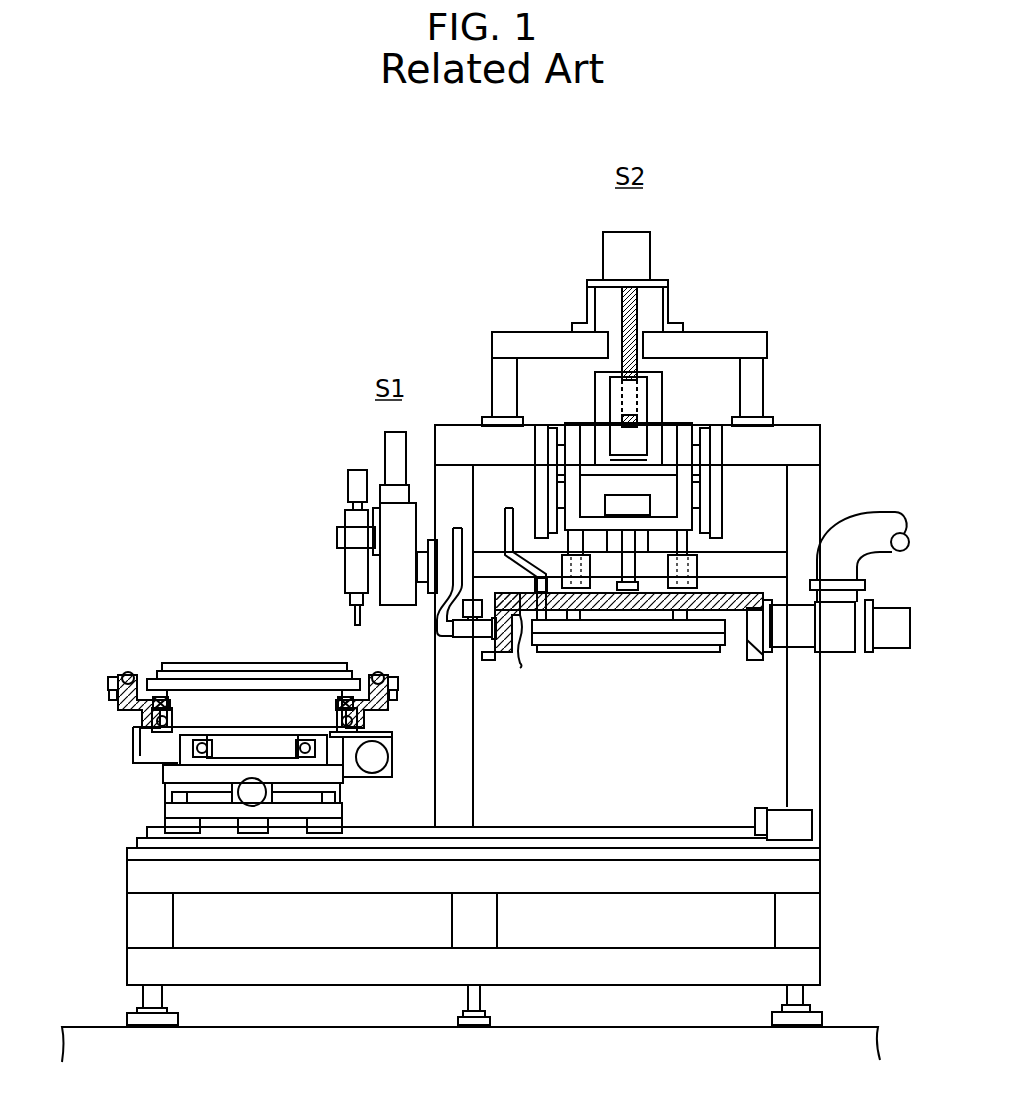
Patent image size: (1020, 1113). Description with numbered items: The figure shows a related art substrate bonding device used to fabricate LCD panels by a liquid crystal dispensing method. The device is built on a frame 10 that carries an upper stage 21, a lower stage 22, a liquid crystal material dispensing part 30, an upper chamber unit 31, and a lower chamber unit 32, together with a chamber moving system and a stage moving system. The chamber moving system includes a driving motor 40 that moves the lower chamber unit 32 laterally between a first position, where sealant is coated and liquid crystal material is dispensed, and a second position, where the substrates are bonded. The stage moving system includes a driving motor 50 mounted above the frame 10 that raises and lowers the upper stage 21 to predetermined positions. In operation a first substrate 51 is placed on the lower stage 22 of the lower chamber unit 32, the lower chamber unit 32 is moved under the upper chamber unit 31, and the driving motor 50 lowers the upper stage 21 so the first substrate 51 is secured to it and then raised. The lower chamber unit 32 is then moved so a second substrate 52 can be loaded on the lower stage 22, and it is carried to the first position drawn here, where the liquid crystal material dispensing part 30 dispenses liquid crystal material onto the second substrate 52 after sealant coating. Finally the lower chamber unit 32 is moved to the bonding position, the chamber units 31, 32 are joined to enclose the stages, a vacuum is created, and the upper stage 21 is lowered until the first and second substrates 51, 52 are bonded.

The frame 10 is at (808, 745).
The upper stage 21 is at (632, 630).
The lower stage 22 is at (195, 695).
The liquid crystal material dispensing part 30 is at (332, 556).
The upper chamber unit 31 is at (517, 608).
The lower chamber unit 32 is at (128, 713).
The driving motor 40 is at (805, 825).
The driving motor 50 is at (686, 256).
The first substrate 51 is at (697, 652).
The second substrate 52 is at (243, 663).